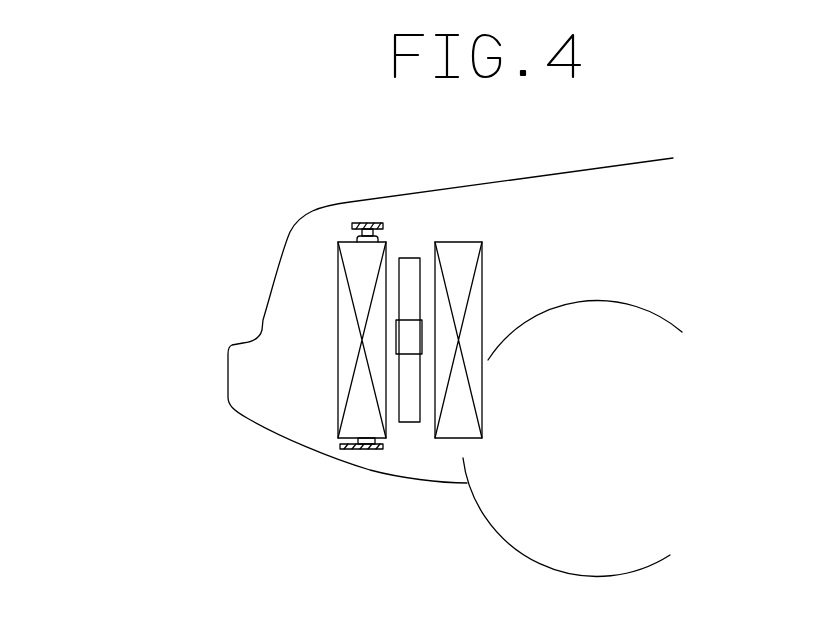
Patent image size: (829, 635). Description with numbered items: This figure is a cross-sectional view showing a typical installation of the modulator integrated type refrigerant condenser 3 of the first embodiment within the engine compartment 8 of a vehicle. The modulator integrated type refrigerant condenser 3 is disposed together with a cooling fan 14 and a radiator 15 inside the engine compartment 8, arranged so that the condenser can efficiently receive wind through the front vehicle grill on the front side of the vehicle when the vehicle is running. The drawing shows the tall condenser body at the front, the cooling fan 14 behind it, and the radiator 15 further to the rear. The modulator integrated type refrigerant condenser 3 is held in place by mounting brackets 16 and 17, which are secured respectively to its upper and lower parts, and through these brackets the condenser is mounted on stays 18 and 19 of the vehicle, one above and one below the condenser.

The modulator integrated type refrigerant condenser 3 is at (343, 312).
The engine compartment 8 is at (582, 241).
The cooling fan 14 is at (411, 412).
The radiator 15 is at (451, 427).
The mounting bracket 16 is at (360, 232).
The mounting bracket 17 is at (340, 442).
The stay 18 is at (363, 223).
The stay 19 is at (360, 448).